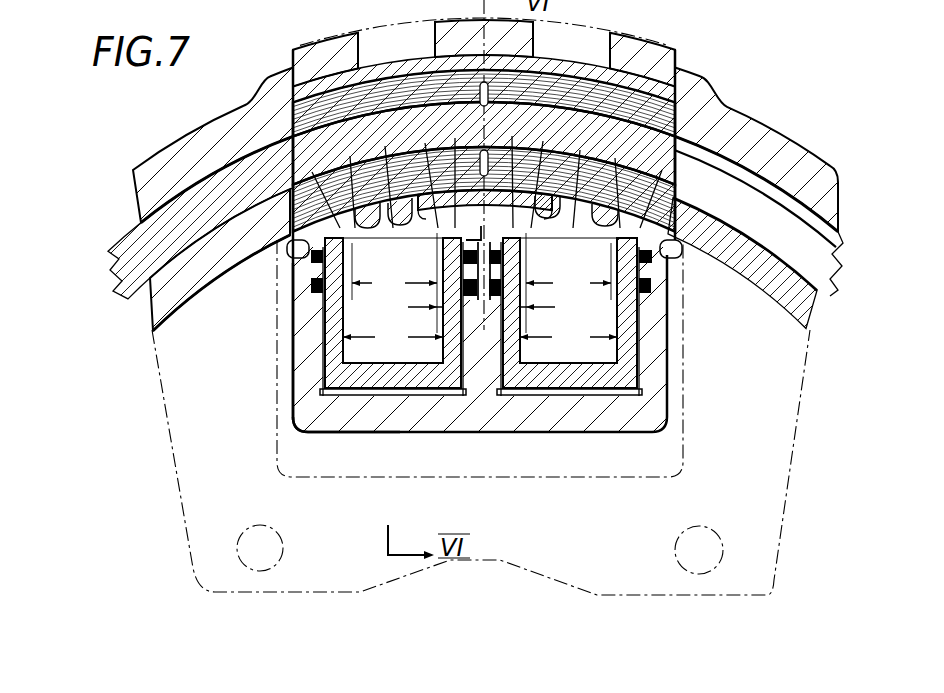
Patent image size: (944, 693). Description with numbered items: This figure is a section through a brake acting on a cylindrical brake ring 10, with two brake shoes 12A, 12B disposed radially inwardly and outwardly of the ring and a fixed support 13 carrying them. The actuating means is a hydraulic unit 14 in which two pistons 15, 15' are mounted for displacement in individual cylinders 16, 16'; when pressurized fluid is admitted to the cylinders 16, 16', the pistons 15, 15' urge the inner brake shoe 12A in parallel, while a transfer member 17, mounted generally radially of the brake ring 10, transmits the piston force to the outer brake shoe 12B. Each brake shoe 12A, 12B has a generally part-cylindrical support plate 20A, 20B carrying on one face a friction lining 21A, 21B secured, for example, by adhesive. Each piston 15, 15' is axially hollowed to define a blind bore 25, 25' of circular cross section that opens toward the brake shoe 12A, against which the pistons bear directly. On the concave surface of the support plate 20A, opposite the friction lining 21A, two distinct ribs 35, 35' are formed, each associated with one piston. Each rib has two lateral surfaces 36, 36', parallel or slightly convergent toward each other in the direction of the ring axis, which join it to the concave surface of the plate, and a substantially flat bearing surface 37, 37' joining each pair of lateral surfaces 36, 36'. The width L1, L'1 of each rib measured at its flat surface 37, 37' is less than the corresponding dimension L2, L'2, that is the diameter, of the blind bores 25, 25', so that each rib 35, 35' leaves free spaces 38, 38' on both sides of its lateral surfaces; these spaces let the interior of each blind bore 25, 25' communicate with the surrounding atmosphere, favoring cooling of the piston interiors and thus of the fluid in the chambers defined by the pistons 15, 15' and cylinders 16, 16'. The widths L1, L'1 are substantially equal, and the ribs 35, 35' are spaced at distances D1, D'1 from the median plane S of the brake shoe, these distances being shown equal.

The cylindrical brake ring 10 is at (118, 245).
The brake shoe 12A is at (682, 208).
The brake shoe 12B is at (678, 127).
The fixed support 13 is at (165, 152).
The hydraulic unit 14 is at (669, 392).
The piston 15 is at (350, 313).
The piston 15' is at (616, 313).
The cylinder 16 is at (353, 371).
The cylinder 16' is at (615, 376).
The transfer member 17 is at (296, 432).
The support plate 20A is at (290, 250).
The support plate 20B is at (310, 86).
The friction lining 21A is at (678, 250).
The friction lining 21B is at (684, 86).
The blind bore 25 is at (393, 413).
The blind bore 25' is at (568, 415).
The rib 35 is at (390, 195).
The rib 35' is at (576, 193).
The lateral surface 36 is at (384, 173).
The lateral surface 36' is at (584, 172).
The bearing surface 37 is at (387, 174).
The bearing surface 37' is at (585, 176).
The free space 38 is at (381, 170).
The free space 38' is at (590, 169).
The median plane S is at (488, 305).
The width of rib L1 is at (394, 288).
The dimension of blind bore L2 is at (393, 342).
The distance from median plane D1 is at (423, 321).
The width of rib L'1 is at (568, 288).
The dimension of blind bore L'2 is at (568, 342).
The distance from median plane D'1 is at (538, 321).